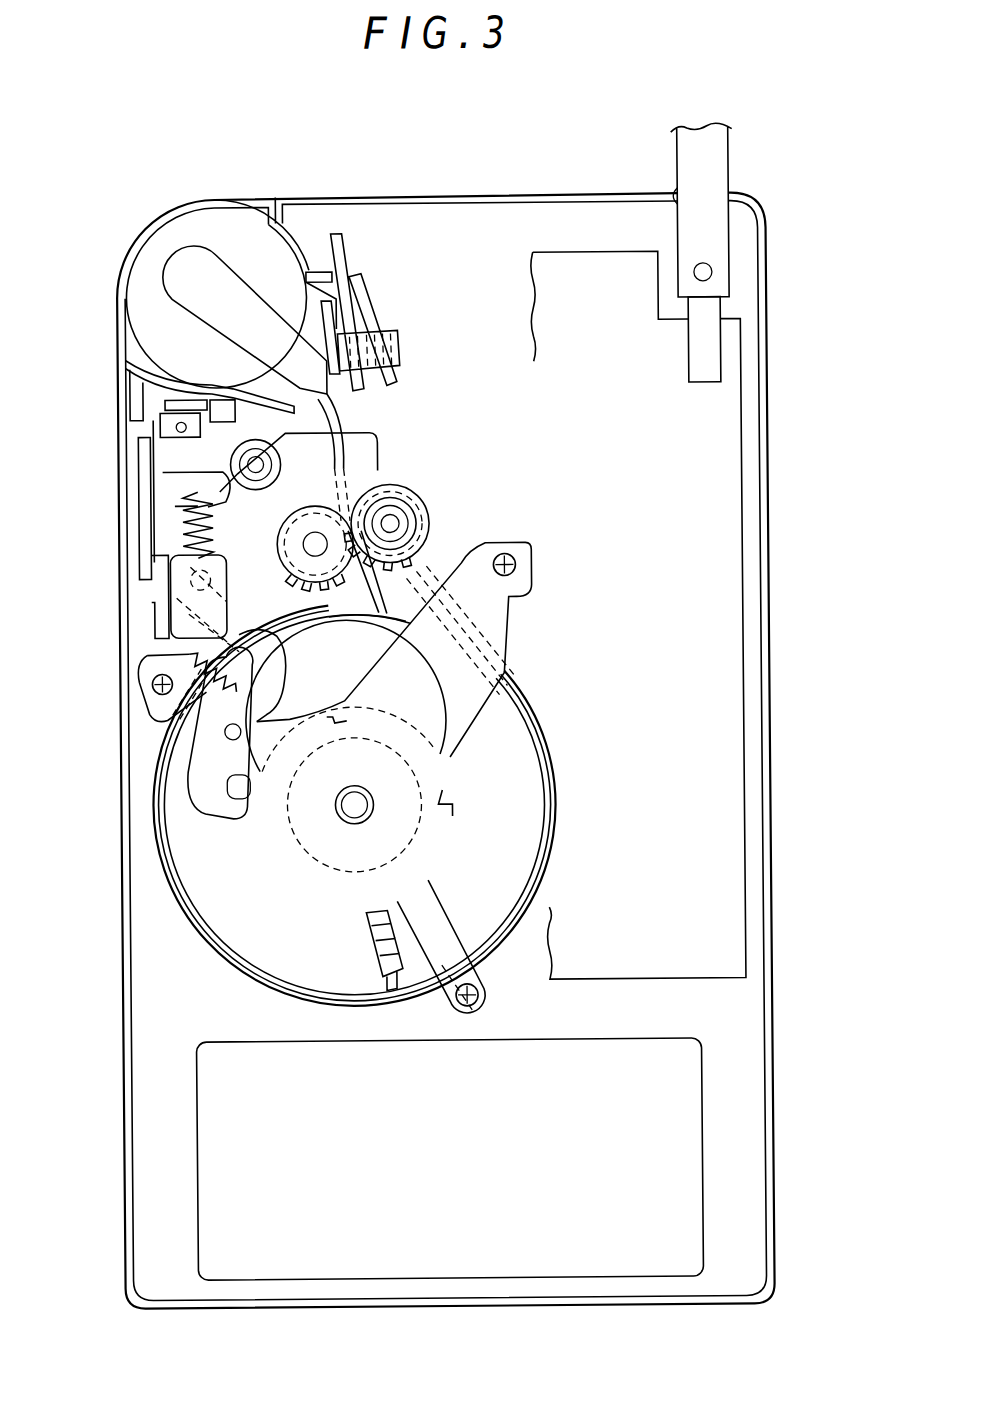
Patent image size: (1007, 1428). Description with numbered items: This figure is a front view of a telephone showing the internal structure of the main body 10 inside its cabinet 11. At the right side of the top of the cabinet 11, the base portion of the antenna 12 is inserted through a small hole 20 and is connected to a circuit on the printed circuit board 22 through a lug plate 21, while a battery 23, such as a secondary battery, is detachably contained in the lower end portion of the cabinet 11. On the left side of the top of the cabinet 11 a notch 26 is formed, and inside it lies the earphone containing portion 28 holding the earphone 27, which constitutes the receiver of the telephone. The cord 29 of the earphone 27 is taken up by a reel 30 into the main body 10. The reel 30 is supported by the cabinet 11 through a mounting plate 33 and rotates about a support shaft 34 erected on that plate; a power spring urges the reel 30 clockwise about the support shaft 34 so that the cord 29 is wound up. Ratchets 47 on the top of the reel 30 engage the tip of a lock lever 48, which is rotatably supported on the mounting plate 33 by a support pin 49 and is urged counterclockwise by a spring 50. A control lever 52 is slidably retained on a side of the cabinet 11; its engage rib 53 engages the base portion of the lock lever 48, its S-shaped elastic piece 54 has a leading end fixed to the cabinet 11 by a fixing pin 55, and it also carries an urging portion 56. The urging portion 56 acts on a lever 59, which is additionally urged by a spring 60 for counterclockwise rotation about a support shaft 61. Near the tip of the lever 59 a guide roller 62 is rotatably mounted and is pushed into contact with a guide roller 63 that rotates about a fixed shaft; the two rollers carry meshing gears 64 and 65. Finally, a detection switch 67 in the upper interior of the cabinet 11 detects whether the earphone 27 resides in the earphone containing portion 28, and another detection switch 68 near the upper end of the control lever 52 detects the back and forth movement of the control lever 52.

The main body 10 is at (470, 190).
The cabinet 11 is at (766, 650).
The antenna 12 is at (713, 172).
The small hole 20 is at (680, 198).
The lug plate 21 is at (716, 364).
The printed circuit board 22 is at (692, 517).
The battery 23 is at (682, 1162).
The notch 26 is at (280, 200).
The earphone 27 is at (210, 220).
The earphone containing portion 28 is at (178, 375).
The cord 29 is at (345, 405).
The reel 30 is at (505, 863).
The mounting plate 33 is at (452, 722).
The support shaft 34 is at (350, 808).
The ratchets 47 is at (450, 803).
The lock lever 48 is at (283, 688).
The support pin 49 is at (228, 733).
The spring 50 is at (148, 653).
The control lever 52 is at (155, 522).
The engage rib 53 is at (170, 625).
The elastic piece 54 is at (170, 436).
The fixing pin 55 is at (195, 416).
The urging portion 56 is at (225, 493).
The lever 59 is at (316, 457).
The spring 60 is at (284, 548).
The support shaft 61 is at (259, 437).
The guide roller 62 is at (226, 582).
The guide roller 63 is at (428, 522).
The gear 64 is at (330, 616).
The gear 65 is at (432, 505).
The detection switch 67 is at (382, 289).
The detection switch 68 is at (136, 395).